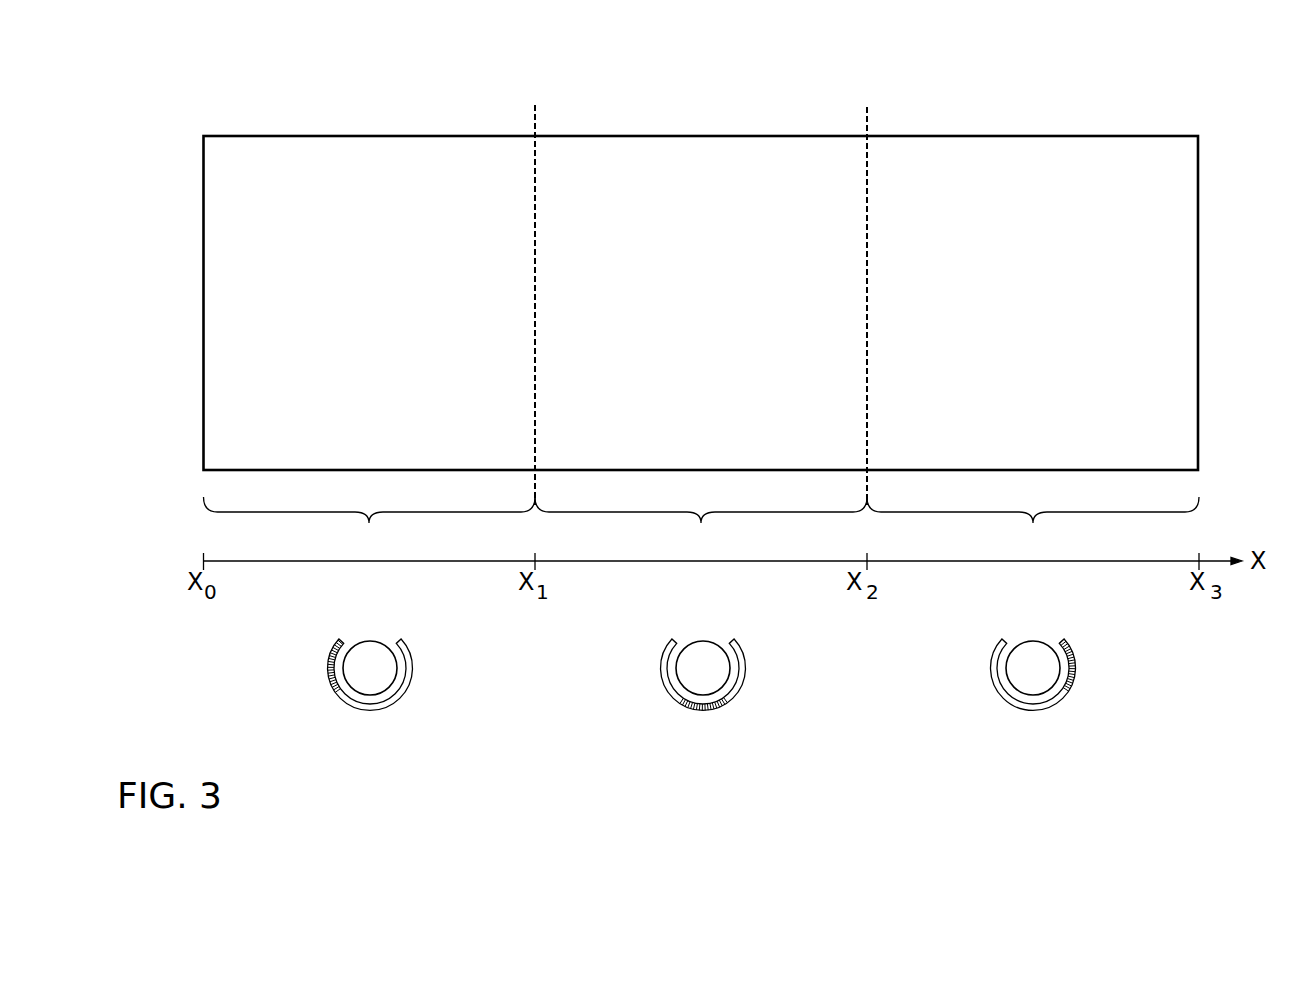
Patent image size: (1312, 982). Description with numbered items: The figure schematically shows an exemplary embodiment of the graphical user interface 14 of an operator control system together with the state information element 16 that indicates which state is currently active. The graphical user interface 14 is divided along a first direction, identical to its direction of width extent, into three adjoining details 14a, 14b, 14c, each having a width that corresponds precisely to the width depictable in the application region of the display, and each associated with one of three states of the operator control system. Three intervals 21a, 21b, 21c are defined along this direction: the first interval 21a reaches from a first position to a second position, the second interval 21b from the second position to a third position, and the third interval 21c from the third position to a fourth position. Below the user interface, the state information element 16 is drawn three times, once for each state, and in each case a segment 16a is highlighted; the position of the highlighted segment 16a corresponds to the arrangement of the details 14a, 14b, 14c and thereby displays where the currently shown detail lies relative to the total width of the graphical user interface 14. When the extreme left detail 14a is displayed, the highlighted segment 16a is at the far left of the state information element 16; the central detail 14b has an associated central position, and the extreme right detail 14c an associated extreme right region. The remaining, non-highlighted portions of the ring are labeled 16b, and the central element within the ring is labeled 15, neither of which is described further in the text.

The graphical user interface 14 is at (1228, 110).
The detail 14a is at (390, 305).
The detail 14b is at (723, 305).
The detail 14c is at (1051, 305).
The first interval 21a is at (370, 526).
The second interval 21b is at (701, 526).
The third interval 21c is at (1033, 526).
The guide wire / rod 15 is at (384, 679).
The state information element 16 is at (710, 695).
The highlighted segment 16a is at (320, 679).
The shell wall portion 16b is at (422, 682).